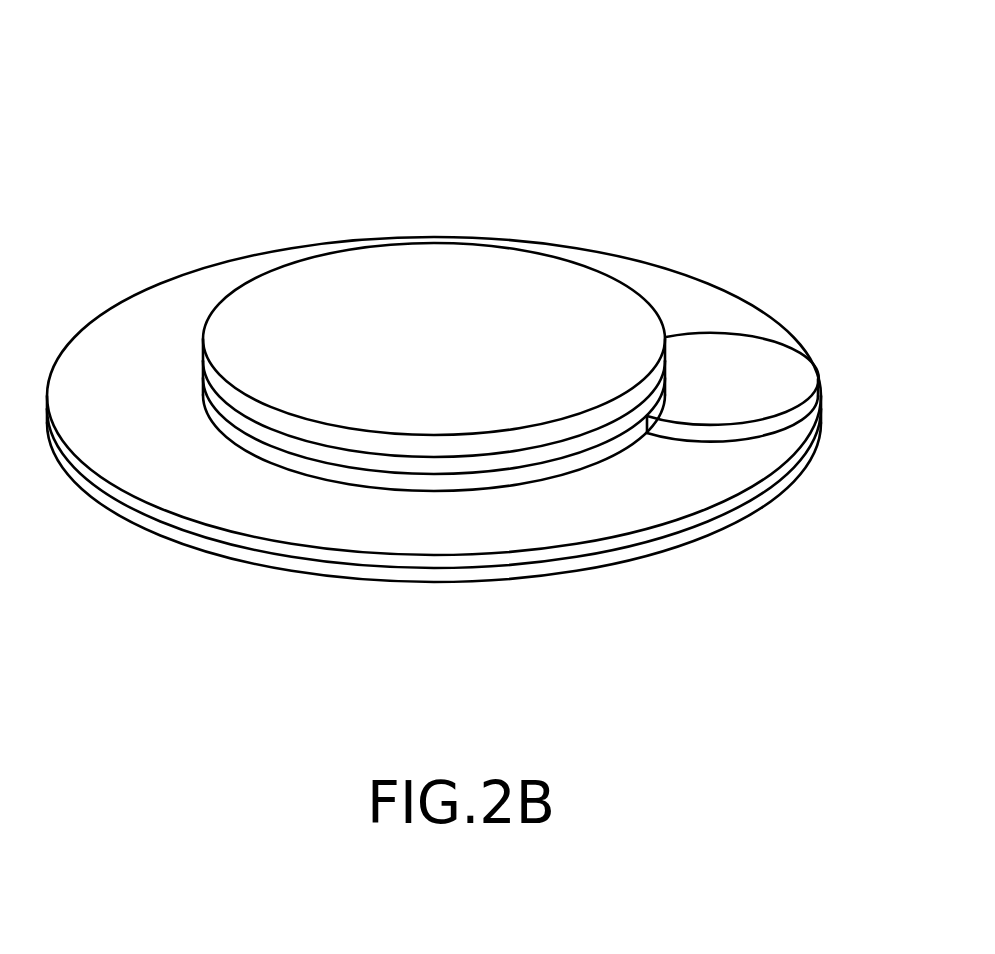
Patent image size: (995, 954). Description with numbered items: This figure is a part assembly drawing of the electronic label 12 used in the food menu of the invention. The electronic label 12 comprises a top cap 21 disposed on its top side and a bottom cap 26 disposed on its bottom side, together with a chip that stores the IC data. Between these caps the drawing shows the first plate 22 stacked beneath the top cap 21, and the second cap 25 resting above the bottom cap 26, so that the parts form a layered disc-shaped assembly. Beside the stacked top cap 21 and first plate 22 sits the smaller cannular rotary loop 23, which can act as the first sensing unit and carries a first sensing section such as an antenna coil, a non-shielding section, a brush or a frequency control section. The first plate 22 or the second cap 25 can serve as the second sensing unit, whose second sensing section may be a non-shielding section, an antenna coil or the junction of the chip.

The electronic label 12 is at (135, 129).
The top cap 21 is at (247, 297).
The first plate 22 is at (203, 385).
The cannular rotary loop 23 is at (780, 358).
The second cap 25 is at (738, 473).
The bottom cap 26 is at (690, 535).